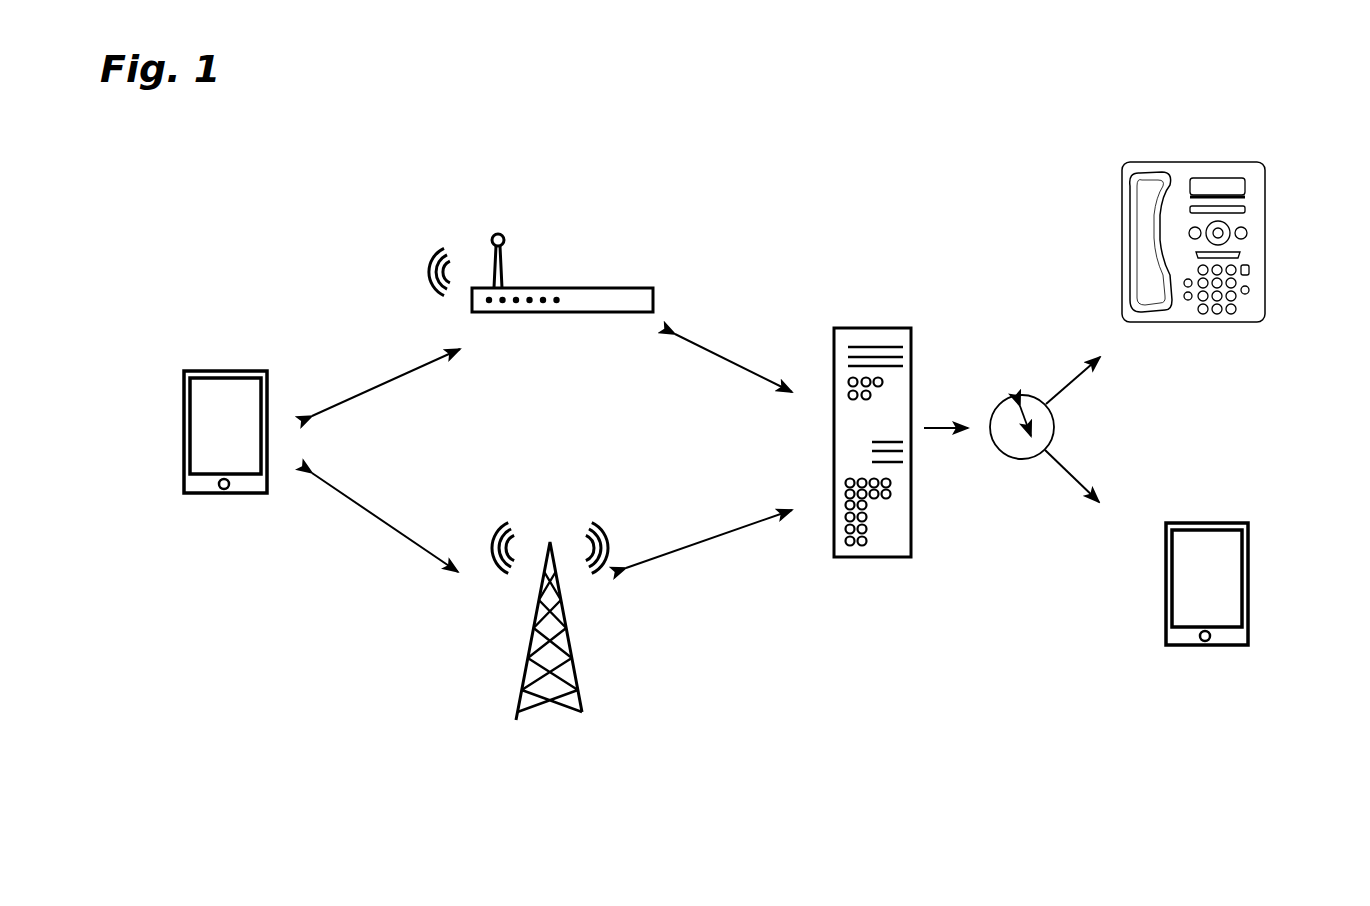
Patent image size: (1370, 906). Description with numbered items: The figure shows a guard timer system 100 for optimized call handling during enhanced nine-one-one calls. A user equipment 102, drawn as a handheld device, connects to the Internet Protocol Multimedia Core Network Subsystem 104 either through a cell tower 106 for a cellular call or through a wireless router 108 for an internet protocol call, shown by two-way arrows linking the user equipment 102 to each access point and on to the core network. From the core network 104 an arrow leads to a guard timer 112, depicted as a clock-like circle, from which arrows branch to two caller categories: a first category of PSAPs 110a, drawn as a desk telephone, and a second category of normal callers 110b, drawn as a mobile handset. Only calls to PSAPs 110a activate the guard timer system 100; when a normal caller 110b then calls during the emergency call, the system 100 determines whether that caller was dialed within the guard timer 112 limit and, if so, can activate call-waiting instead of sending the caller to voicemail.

The guard timer system 100 is at (305, 200).
The user equipment 102 is at (184, 418).
The Internet Protocol Multimedia Core Network Subsystem 104 is at (845, 328).
The cell tower 106 is at (582, 712).
The wireless router 108 is at (555, 287).
The PSAP caller 110a is at (1263, 257).
The normal caller 110b is at (1248, 588).
The guard timer 112 is at (1027, 460).